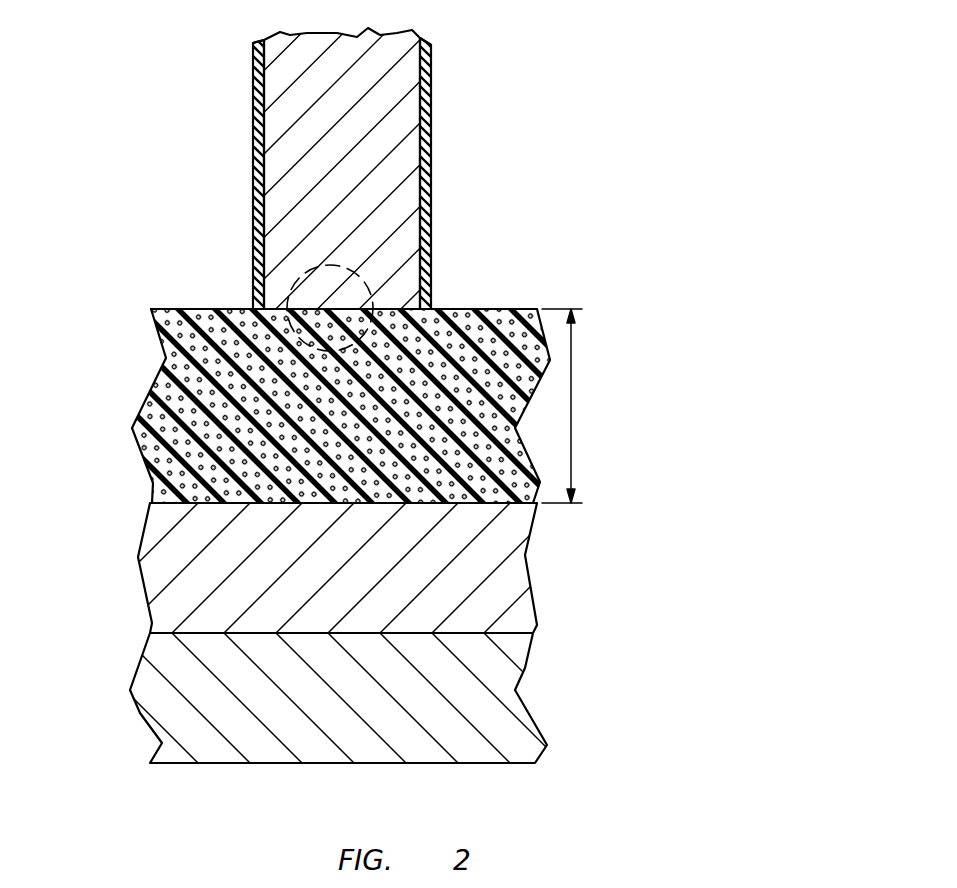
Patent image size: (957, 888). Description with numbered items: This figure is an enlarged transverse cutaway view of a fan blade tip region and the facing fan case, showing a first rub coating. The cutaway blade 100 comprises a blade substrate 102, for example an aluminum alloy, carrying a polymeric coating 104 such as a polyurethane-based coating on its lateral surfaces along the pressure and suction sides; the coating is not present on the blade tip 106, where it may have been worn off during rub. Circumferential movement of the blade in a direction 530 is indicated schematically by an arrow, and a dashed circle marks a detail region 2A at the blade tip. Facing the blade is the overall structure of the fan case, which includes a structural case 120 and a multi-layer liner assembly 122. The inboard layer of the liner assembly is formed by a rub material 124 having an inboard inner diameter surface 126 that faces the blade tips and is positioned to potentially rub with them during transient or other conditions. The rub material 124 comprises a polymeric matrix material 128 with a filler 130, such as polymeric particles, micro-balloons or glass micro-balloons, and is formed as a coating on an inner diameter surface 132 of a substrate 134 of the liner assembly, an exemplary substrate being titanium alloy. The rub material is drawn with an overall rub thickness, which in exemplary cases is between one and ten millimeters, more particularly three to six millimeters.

The blade 100 is at (455, 82).
The blade substrate 102 is at (407, 108).
The polymeric coating 104 is at (426, 198).
The blade tip 106 is at (452, 309).
The structural case 120 is at (341, 698).
The multi-layer liner assembly 122 is at (391, 497).
The rub material 124 is at (353, 380).
The inboard/inner diameter (ID) surface 126 is at (193, 309).
The polymeric matrix material 128 is at (147, 460).
The filler 130 is at (163, 385).
The ID surface of the substrate 132 is at (162, 493).
The substrate 134 is at (508, 580).
The direction 530 is at (218, 178).
The detail region 2A is at (305, 268).